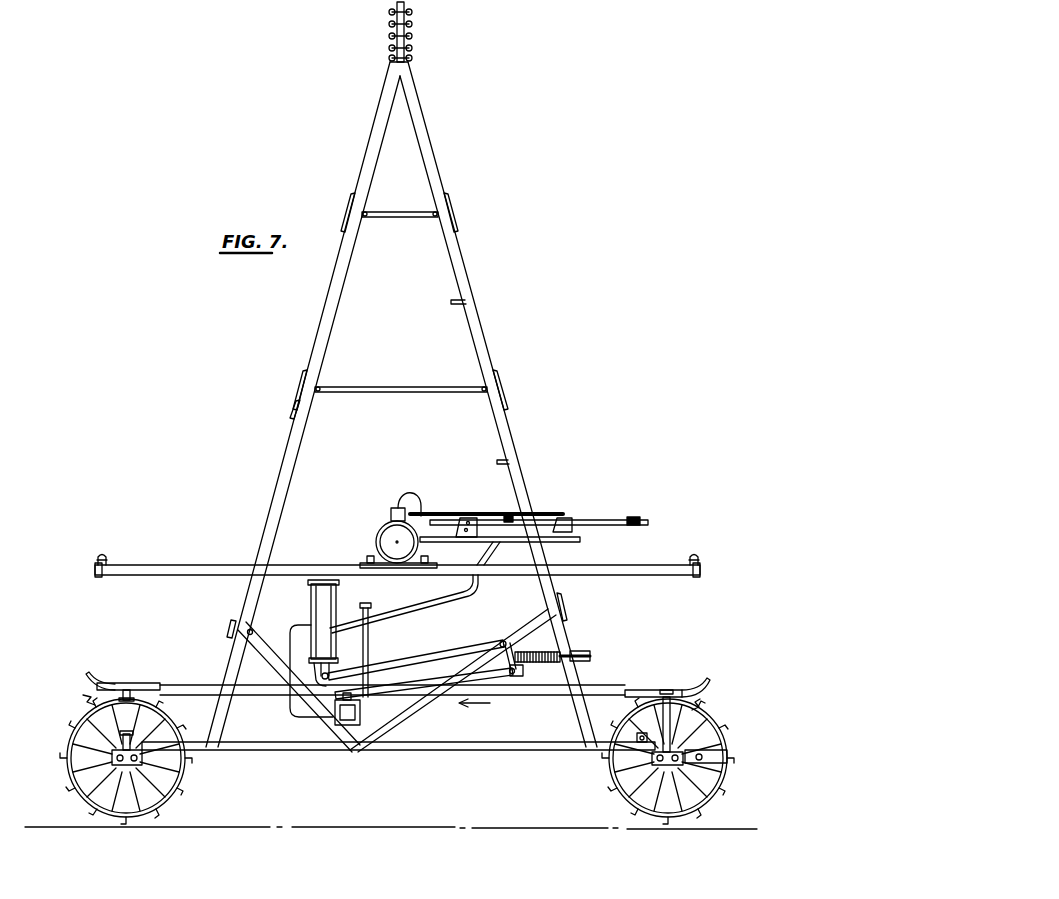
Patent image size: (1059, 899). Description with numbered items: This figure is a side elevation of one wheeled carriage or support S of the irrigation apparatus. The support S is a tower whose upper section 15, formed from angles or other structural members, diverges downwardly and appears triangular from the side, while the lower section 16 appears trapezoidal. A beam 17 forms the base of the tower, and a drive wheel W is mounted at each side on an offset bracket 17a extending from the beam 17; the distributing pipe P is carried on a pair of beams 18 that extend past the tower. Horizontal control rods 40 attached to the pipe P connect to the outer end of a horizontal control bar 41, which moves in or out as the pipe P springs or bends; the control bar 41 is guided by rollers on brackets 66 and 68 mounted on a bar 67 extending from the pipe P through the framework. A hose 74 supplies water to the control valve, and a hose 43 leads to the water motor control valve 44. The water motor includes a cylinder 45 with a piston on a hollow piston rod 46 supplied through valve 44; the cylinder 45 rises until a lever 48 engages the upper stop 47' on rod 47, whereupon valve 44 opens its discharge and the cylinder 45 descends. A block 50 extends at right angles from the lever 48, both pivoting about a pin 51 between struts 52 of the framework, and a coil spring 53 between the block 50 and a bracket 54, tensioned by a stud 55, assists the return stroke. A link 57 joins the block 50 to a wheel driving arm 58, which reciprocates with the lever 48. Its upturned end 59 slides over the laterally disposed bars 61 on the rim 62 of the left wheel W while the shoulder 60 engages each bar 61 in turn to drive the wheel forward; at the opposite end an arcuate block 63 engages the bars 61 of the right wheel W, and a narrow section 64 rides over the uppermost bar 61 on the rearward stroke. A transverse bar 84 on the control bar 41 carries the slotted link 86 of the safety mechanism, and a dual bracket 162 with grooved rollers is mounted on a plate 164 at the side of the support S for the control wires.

The upper section 15 is at (473, 297).
The support S is at (269, 406).
The lower section 16 is at (228, 630).
The beam 17 is at (258, 745).
The offset bracket 17a is at (148, 765).
The beams 18 is at (168, 576).
The control rods 40 is at (641, 520).
The control bar 41 is at (539, 510).
The hose 43 is at (404, 604).
The water motor control valve 44 is at (358, 703).
The cylinder 45 is at (311, 613).
The hollow piston rod 46 is at (297, 651).
The rod 47 is at (381, 652).
The upper stop 47' is at (354, 595).
The lever 48 is at (417, 655).
The block 50 is at (537, 648).
The pin 51 is at (493, 631).
The struts 52 is at (397, 717).
The coil spring 53 is at (539, 660).
The bracket 54 is at (572, 651).
The stud 55 is at (590, 656).
The link 57 is at (412, 680).
The wheel driving arm 58 is at (510, 694).
The upturned end 59 is at (91, 669).
The shoulder 60 is at (128, 680).
The bar 61 is at (712, 693).
The rim 62 is at (68, 780).
The arcuate block 63 is at (708, 680).
The narrow section 64 is at (653, 707).
The brackets 66 is at (573, 530).
The bar 67 is at (516, 542).
The brackets 68 is at (463, 538).
The hose 74 is at (399, 498).
The transverse bar 84 is at (505, 513).
The slotted link 86 is at (440, 512).
The pipe P is at (374, 524).
The drive wheel W is at (64, 744).
The dual bracket 162 is at (393, 548).
The plate 164 is at (95, 569).